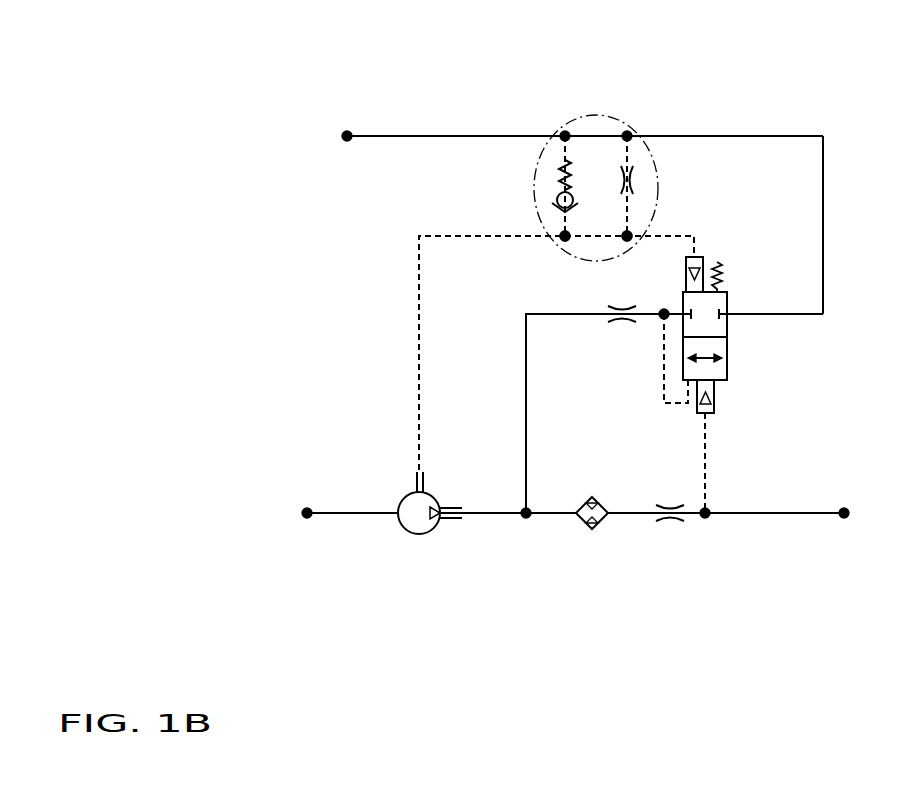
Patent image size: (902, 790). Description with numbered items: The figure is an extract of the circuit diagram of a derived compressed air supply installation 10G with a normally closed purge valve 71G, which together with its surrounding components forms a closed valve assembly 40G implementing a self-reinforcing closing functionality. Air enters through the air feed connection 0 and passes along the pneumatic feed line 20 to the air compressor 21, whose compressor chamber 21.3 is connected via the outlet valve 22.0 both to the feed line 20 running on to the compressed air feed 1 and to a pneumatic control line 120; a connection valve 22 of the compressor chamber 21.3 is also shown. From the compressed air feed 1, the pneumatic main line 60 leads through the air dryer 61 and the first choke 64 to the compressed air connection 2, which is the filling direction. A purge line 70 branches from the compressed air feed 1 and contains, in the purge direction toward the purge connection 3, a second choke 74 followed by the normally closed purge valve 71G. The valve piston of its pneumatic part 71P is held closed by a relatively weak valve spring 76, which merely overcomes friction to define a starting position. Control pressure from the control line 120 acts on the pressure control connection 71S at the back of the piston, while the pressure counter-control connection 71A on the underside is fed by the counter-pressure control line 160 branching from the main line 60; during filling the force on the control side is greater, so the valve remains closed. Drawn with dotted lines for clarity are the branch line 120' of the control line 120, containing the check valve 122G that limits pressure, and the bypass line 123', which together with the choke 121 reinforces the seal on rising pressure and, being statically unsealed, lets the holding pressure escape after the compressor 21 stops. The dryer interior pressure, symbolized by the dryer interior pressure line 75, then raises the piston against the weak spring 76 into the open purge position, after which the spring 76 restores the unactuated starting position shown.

The compressed air supply installation 10G is at (358, 92).
The purge connection 3 is at (345, 140).
The valve assembly 40G is at (553, 254).
The check valve 122G is at (560, 188).
The choke 121 is at (640, 179).
The branch line 120' is at (516, 223).
The bypass line 123' is at (680, 223).
The control line 120 is at (556, 353).
The purge line 70 is at (528, 415).
The second choke 74 is at (622, 326).
The normally closed purge valve 71G is at (730, 306).
The pneumatic part 71P is at (730, 342).
The pressure control connection 71S is at (686, 263).
The valve spring 76 is at (722, 272).
The pressure counter-control connection 71A is at (716, 411).
The dryer interior pressure line 75 is at (675, 406).
The counter-pressure control line 160 is at (707, 451).
The pneumatic feed line 20 is at (318, 510).
The air feed connection 0 is at (304, 518).
The compressed air connection 2 is at (848, 518).
The compressed air feed 1 is at (530, 510).
The air compressor 21 is at (378, 547).
The compressor chamber 21.3 is at (418, 533).
The connection valve 22 is at (414, 478).
The outlet valve 22.0 is at (458, 507).
The pneumatic main line 60 is at (553, 517).
The air dryer 61 is at (600, 521).
The first choke 64 is at (672, 525).